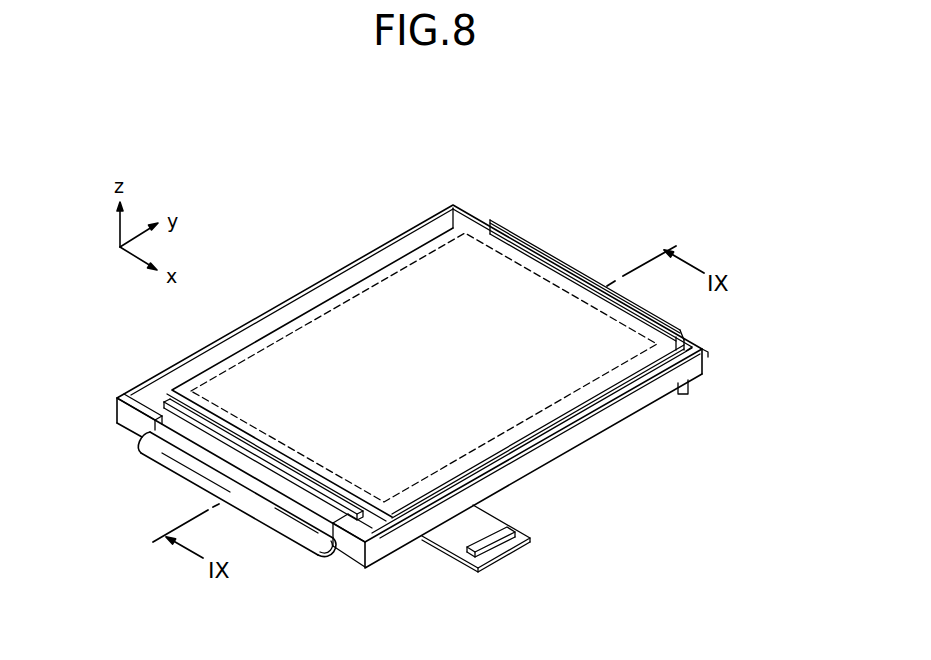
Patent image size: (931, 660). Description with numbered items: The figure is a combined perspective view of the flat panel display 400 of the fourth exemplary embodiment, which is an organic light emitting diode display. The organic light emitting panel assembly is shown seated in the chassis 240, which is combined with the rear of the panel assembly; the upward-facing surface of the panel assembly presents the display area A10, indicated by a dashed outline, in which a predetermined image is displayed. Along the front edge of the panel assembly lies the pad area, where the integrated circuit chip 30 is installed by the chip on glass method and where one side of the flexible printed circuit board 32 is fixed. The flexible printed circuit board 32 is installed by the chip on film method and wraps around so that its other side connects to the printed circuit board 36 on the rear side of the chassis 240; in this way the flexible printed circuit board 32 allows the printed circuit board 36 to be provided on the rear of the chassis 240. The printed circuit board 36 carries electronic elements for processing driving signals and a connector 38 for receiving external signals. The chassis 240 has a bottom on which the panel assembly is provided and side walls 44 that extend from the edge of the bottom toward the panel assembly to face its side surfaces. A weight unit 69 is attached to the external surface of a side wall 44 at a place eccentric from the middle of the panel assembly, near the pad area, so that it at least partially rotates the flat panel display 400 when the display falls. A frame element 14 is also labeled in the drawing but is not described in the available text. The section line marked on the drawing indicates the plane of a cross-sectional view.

The flat panel display 400 is at (331, 203).
The frame 14 is at (497, 247).
The display area A10 is at (548, 277).
The integrated circuit chip 30 is at (166, 405).
The flexible printed circuit board 32 is at (172, 463).
The printed circuit board 36 is at (451, 540).
The connector 38 is at (494, 538).
The side walls 44 is at (538, 451).
The weight unit 69 is at (675, 390).
The chassis 240 is at (714, 351).